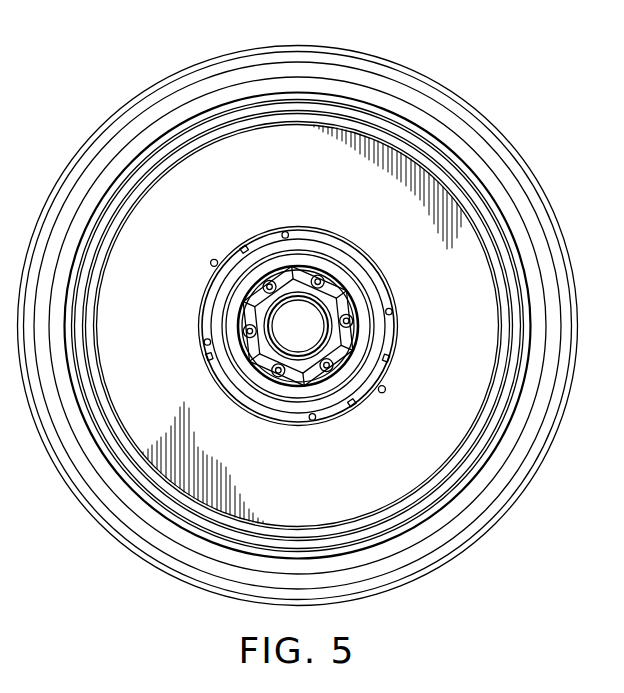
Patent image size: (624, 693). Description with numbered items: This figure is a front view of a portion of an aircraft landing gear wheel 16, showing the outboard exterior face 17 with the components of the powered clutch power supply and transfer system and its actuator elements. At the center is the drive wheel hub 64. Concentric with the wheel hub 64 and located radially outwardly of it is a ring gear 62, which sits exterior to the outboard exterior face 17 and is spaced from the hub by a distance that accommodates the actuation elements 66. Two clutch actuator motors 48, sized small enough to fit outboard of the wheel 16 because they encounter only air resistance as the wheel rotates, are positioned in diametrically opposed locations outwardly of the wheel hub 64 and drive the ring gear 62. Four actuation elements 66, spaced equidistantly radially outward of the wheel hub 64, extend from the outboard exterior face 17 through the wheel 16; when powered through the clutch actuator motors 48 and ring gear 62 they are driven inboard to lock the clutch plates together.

The wheel 16 is at (152, 210).
The outboard exterior face 17 is at (124, 291).
The clutch actuator motor 48 is at (213, 259).
The ring gear 62 is at (383, 278).
The wheel hub 64 is at (339, 269).
The actuation element 66 is at (288, 233).